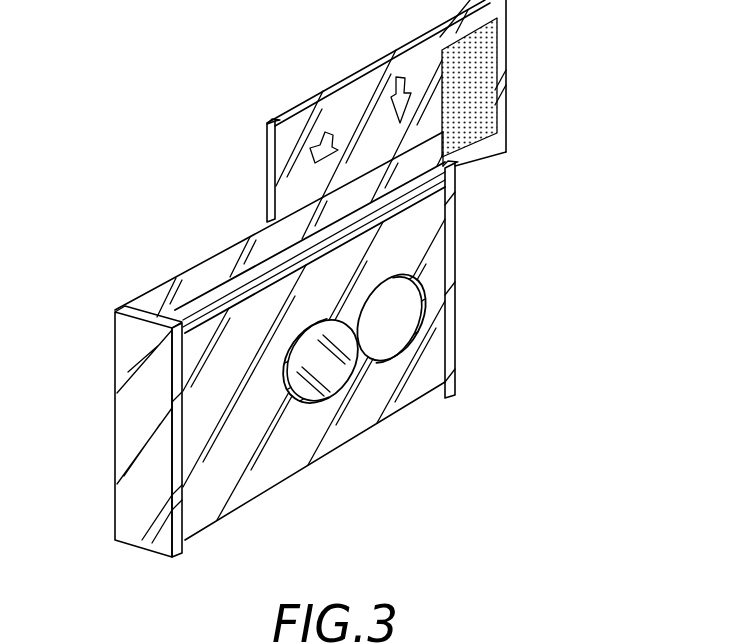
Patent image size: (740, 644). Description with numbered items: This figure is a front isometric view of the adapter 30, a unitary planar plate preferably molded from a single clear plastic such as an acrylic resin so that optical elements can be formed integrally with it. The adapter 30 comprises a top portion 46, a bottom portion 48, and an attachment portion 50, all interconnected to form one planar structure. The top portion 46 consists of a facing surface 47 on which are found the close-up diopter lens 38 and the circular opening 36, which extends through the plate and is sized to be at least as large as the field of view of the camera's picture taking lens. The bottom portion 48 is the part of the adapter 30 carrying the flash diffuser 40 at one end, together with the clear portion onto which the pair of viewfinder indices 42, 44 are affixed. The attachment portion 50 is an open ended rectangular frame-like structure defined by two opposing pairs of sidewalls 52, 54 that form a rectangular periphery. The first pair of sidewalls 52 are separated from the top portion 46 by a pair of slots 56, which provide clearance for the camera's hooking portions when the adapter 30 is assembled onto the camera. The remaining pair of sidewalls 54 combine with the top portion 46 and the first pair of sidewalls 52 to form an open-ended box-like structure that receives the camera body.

The adapter 30 is at (296, 279).
The circular opening 36 is at (398, 332).
The close-up diopter lens 38 is at (338, 378).
The flash diffuser 40 is at (381, 111).
The viewfinder index 42 is at (325, 132).
The viewfinder index 44 is at (399, 77).
The top portion 46 is at (197, 510).
The facing surface 47 is at (260, 480).
The bottom portion 48 is at (259, 119).
The attachment portion 50 is at (279, 345).
The first pair of sidewalls 52 is at (190, 282).
The second pair of sidewalls 54 is at (130, 420).
The slots 56 is at (268, 273).